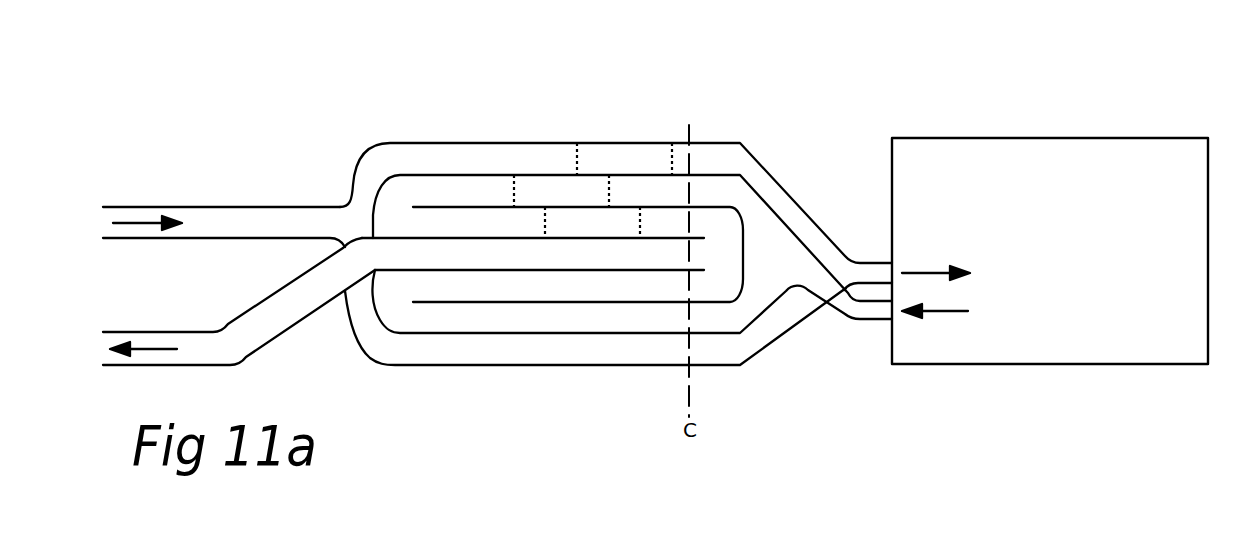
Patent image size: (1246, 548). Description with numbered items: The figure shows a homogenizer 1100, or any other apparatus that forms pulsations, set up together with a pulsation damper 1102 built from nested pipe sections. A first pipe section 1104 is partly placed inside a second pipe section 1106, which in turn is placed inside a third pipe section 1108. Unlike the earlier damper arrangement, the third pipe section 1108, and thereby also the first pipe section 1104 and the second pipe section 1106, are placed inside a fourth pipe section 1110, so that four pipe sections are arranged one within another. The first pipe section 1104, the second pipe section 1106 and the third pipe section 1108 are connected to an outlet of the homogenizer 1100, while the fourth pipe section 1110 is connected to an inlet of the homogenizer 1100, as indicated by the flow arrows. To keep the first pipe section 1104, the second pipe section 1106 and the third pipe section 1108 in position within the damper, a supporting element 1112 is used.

The homogenizer 1100 is at (1055, 168).
The pulsation damper 1102 is at (770, 127).
The first pipe section 1104 is at (457, 270).
The second pipe section 1106 is at (525, 302).
The third pipe section 1108 is at (590, 333).
The fourth pipe section 1110 is at (648, 365).
The supporting element 1112 is at (513, 190).